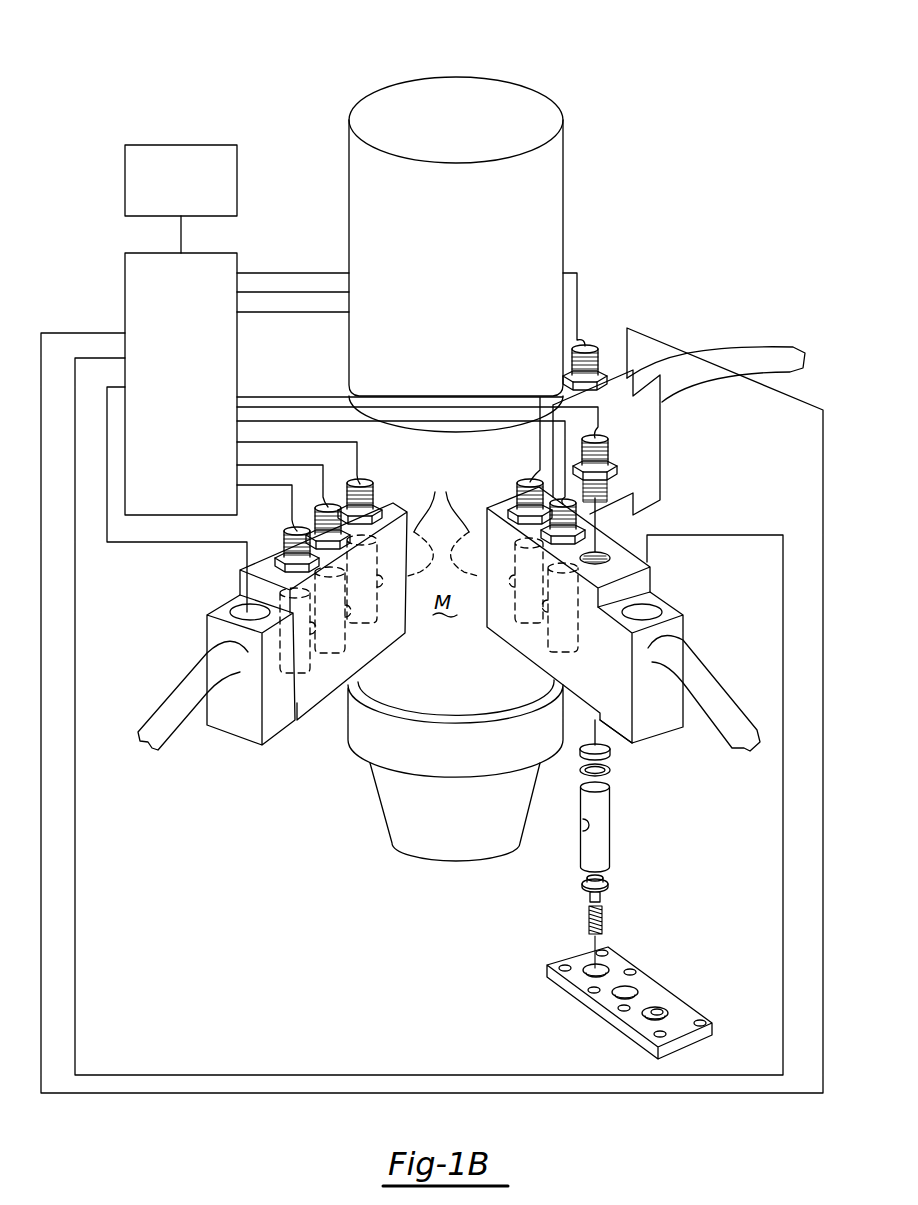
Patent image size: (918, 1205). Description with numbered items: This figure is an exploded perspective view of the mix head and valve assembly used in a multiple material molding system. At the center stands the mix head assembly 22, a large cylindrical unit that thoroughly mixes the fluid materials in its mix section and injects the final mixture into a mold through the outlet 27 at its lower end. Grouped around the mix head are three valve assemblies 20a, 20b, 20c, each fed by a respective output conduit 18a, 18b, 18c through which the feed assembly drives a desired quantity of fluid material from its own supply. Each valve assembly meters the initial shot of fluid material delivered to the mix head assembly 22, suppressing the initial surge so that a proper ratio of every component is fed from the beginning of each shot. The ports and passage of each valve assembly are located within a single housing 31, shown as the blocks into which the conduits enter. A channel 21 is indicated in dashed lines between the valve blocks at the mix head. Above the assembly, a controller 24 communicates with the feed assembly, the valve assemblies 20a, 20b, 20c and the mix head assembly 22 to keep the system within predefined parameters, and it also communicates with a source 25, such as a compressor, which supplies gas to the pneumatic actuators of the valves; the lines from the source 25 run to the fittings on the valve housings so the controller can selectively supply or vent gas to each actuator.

The mix head assembly 22 is at (492, 56).
The controller 24 is at (133, 173).
The source 25 is at (190, 420).
The channel 21 is at (443, 523).
The valve assembly 20a is at (686, 453).
The valve assembly 20b is at (692, 622).
The valve assembly 20c is at (194, 620).
The housing 31 is at (240, 714).
The output conduit 18a is at (748, 353).
The output conduit 18b is at (722, 732).
The output conduit 18c is at (164, 738).
The outlet 27 is at (392, 820).